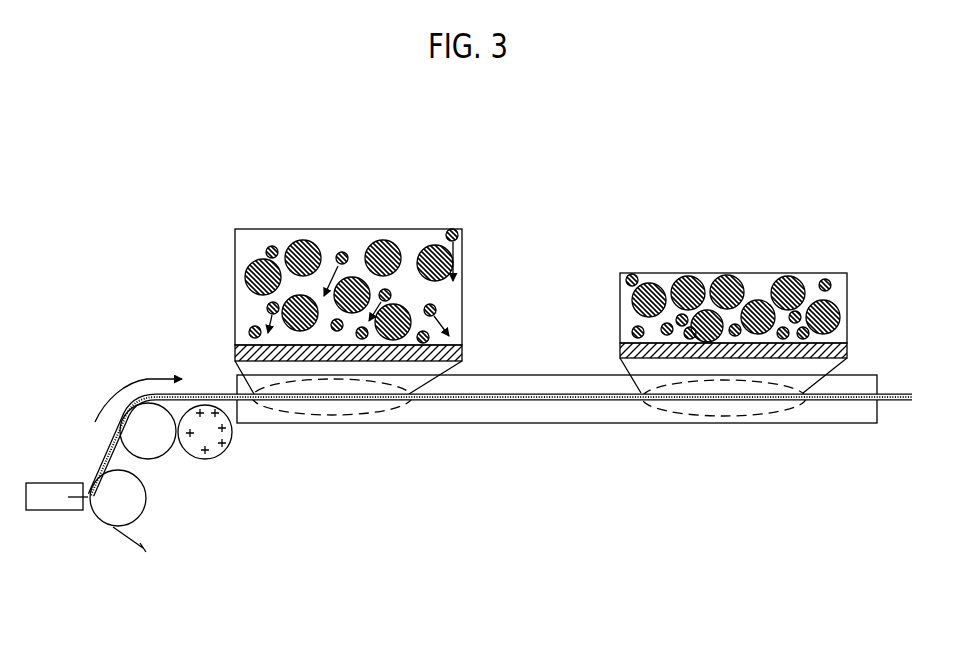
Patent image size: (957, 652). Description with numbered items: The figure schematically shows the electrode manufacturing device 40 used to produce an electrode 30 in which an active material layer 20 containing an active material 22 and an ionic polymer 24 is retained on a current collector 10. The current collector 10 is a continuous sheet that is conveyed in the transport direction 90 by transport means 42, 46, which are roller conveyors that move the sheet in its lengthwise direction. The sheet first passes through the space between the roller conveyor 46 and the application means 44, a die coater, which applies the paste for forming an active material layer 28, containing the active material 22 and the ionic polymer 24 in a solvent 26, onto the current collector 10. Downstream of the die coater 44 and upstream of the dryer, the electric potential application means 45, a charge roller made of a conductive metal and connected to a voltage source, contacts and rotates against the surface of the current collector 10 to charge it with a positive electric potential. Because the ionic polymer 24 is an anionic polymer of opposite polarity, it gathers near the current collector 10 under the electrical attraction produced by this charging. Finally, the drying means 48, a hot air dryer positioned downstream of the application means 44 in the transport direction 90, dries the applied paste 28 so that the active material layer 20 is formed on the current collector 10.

The current collector 10 is at (455, 352).
The active material layer 20 is at (802, 268).
The active material 22 is at (382, 240).
The ionic polymer 24 is at (249, 330).
The solvent 26 is at (250, 248).
The paste for forming an active material layer 28 is at (440, 228).
The electrode 30 is at (745, 317).
The electrode manufacturing device 40 is at (164, 441).
The transport means 42 is at (157, 450).
The application means 44 is at (50, 507).
The electric potential application means 45 is at (232, 432).
The transport means 46 is at (135, 500).
The drying means 48 is at (836, 415).
The transport direction 90 is at (147, 378).